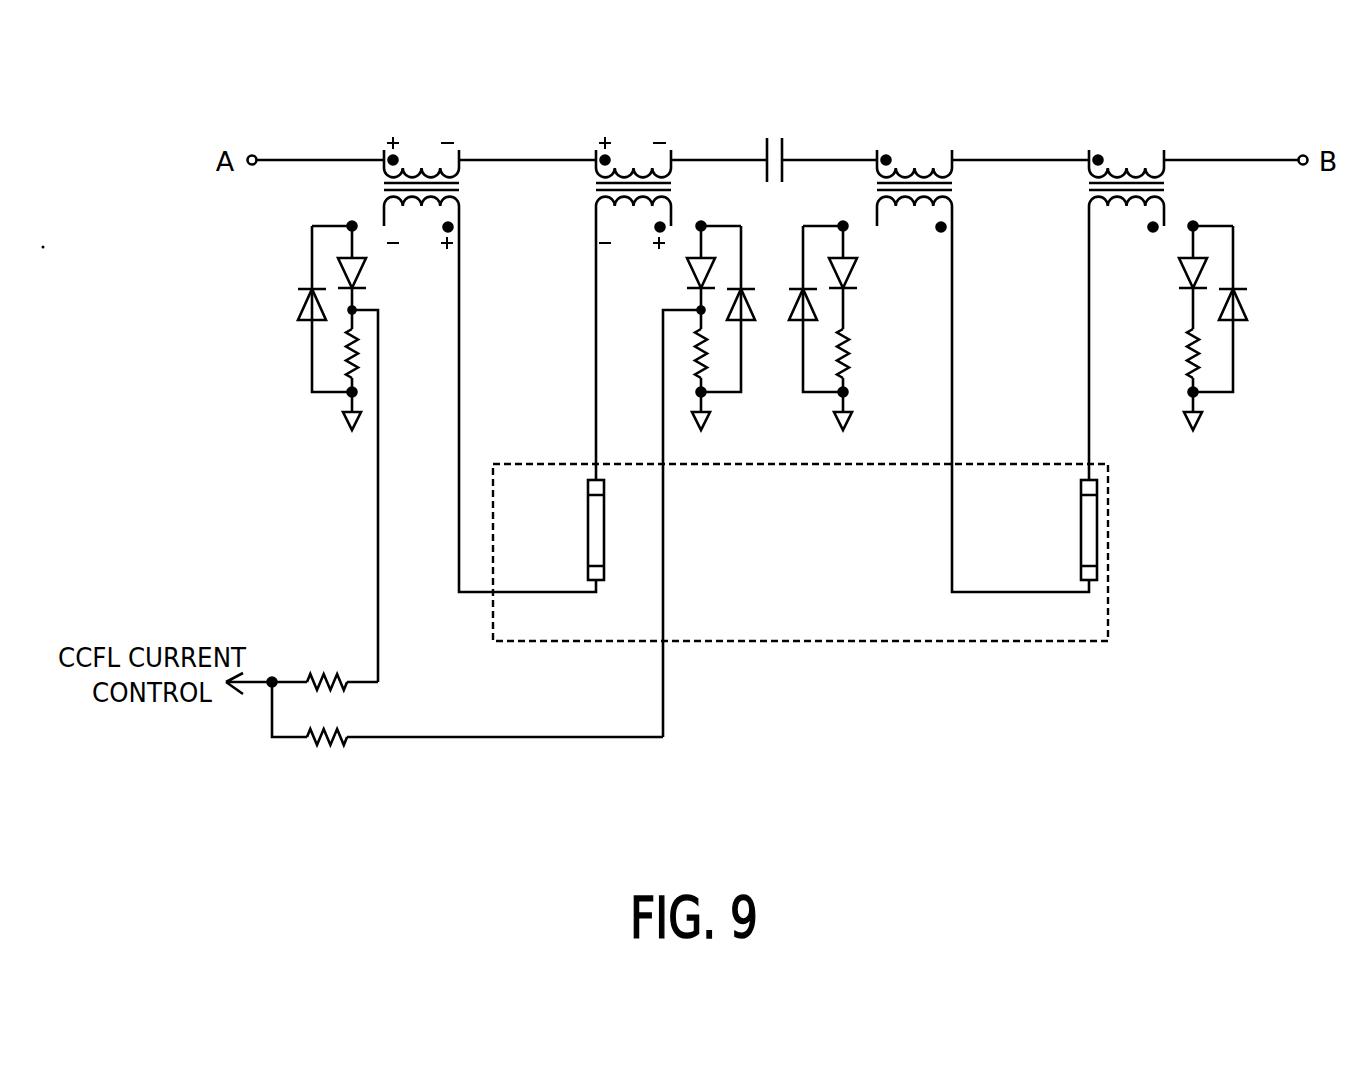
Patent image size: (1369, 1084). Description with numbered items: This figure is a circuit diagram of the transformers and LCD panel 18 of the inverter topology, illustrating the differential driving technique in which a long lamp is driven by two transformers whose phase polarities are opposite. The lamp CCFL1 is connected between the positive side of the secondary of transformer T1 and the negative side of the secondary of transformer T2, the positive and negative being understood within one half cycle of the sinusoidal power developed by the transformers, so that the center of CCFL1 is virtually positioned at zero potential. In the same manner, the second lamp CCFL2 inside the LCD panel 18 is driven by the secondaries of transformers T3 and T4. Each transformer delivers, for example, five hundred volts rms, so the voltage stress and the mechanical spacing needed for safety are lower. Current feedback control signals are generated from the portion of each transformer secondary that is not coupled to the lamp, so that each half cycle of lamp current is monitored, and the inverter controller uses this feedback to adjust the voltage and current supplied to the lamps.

The LCD panel 18 is at (893, 641).
The transformer T1 is at (421, 165).
The transformer T2 is at (633, 165).
The transformer T3 is at (914, 165).
The transformer T4 is at (1126, 165).
The cold-cathode fluorescent lamp CCFL1 is at (552, 530).
The cold-cathode fluorescent lamp CCFL2 is at (1045, 530).